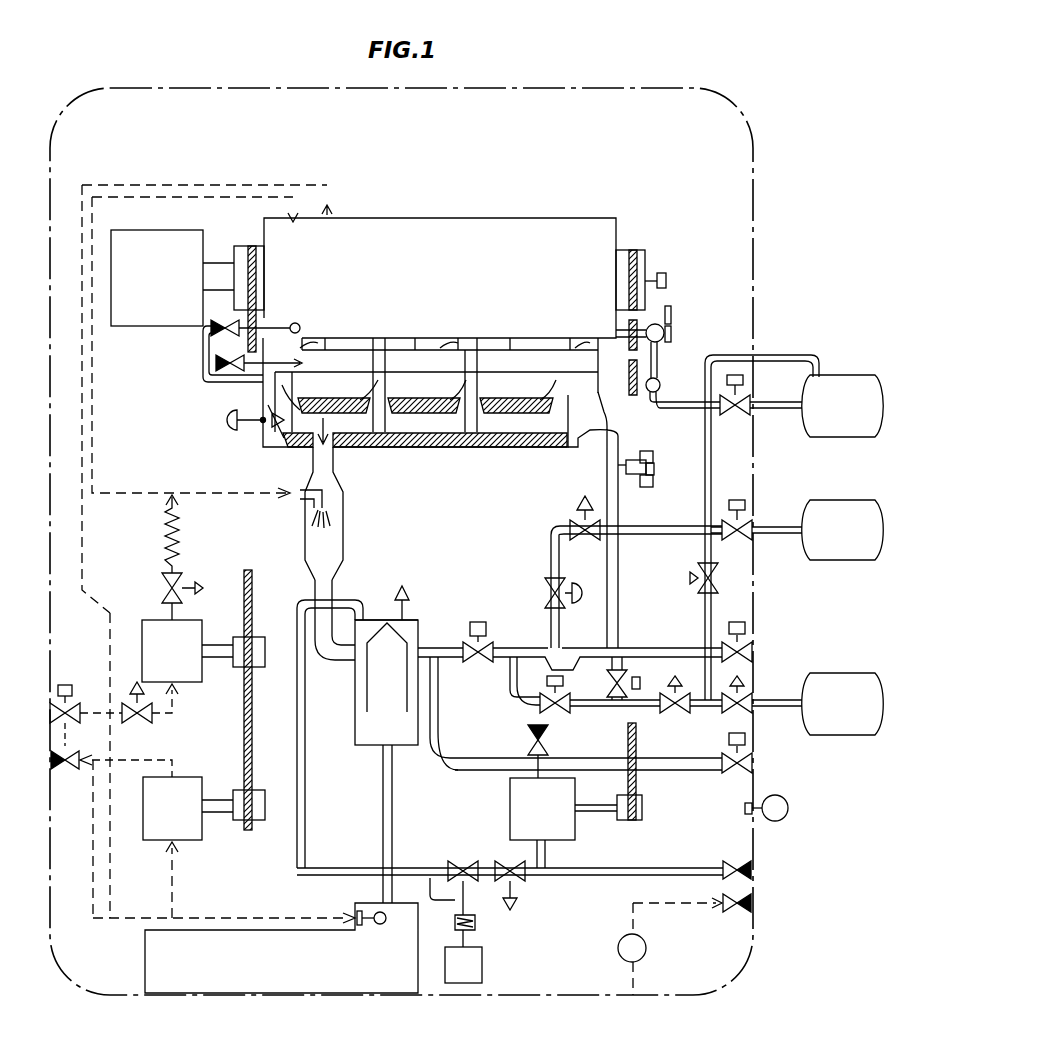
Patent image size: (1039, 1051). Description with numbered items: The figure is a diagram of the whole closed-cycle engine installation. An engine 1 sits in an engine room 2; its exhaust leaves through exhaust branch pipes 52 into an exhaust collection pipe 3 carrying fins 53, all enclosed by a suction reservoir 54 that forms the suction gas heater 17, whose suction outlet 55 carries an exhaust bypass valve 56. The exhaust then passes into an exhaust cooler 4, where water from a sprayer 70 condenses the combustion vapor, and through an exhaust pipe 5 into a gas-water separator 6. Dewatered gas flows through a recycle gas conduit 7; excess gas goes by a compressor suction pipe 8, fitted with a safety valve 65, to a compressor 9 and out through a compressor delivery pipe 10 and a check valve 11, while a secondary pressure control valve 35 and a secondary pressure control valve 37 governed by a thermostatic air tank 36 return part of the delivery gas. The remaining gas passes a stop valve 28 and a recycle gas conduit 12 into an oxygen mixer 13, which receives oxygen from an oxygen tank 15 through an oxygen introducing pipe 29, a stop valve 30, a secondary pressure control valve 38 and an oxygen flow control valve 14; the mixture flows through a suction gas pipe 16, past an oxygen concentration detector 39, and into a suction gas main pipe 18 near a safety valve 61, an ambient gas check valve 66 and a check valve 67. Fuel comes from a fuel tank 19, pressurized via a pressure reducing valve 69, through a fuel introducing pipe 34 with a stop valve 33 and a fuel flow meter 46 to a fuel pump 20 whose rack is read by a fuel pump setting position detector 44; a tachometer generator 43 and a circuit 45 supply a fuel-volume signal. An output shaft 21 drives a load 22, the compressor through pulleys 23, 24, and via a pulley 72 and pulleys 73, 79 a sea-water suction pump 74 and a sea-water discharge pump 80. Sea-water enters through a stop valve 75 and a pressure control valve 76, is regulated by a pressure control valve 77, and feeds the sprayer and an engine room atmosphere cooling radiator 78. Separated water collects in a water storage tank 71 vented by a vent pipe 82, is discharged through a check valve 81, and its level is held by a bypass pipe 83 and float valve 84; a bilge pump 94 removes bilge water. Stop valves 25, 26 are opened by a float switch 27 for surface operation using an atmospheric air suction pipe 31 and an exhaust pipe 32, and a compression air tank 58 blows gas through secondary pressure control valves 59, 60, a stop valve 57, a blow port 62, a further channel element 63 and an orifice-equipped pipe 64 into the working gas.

The engine 1 is at (440, 278).
The engine room 2 is at (401, 541).
The exhaust collection pipe 3 is at (520, 448).
The exhaust cooler 4 is at (345, 495).
The exhaust pipe 5 is at (336, 576).
The gas-water separator 6 is at (355, 718).
The recycle gas conduit 7 is at (428, 648).
The compressor suction pipe 8 is at (445, 735).
The compressor 9 is at (542, 809).
The compressor delivery pipe 10 is at (600, 877).
The check valve 11 is at (737, 862).
The recycle gas conduit 12 is at (523, 647).
The oxygen mixer 13 is at (570, 648).
The oxygen flow control valve 14 is at (560, 585).
The oxygen tank 15 is at (843, 530).
The suction gas pipe 16 is at (620, 624).
The suction gas heater 17 is at (480, 447).
The suction gas main pipe 18 is at (312, 378).
The fuel tank 19 is at (843, 406).
The fuel pump 20 is at (672, 333).
The output shaft 21 is at (220, 262).
The load 22 is at (157, 278).
The pulley 23 is at (636, 248).
The pulley 24 is at (645, 812).
The stop valve 25 is at (745, 645).
The stop valve 26 is at (752, 758).
The float switch 27 is at (788, 812).
The stop valve 28 is at (478, 620).
The oxygen introducing pipe 29 is at (644, 538).
The stop valve 30 is at (737, 500).
The atmospheric air suction pipe 31 is at (678, 410).
The exhaust pipe 32 is at (708, 706).
The stop valve 33 is at (733, 416).
The fuel introducing pipe 34 is at (782, 410).
The secondary pressure control valve 35 is at (518, 906).
The thermostatic air tank 36 is at (482, 970).
The secondary pressure control valve 37 is at (463, 860).
The secondary pressure control valve 38 is at (575, 503).
The oxygen concentration detector 39 is at (655, 460).
The tachometer generator 43 is at (668, 270).
The fuel pump setting position detector 44 is at (672, 312).
The circuit 45 is at (660, 382).
The fuel flow meter 46 is at (736, 914).
The exhaust branch pipe 52 is at (480, 376).
The fins 53 is at (415, 448).
The suction reservoir 54 is at (378, 448).
The suction outlet 55 is at (280, 447).
The exhaust bypass valve 56 is at (268, 425).
The stop valve 57 is at (560, 710).
The compression air tank 58 is at (817, 704).
The secondary pressure control valve 59 is at (748, 708).
The secondary pressure control valve 60 is at (674, 712).
The safety valve 61 is at (225, 340).
The blow port 62 is at (508, 672).
The pipe 63 is at (612, 686).
The orifice-equipped pipe 64 is at (640, 680).
The safety valve 65 is at (528, 745).
The ambient gas check valve 66 is at (410, 592).
The check valve 67 is at (215, 362).
The pressure reducing valve 69 is at (688, 578).
The sprayer 70 is at (312, 505).
The water storage tank 71 is at (281, 869).
The pulley 72 is at (252, 245).
The pulley 73 is at (256, 637).
The sea-water suction pump 74 is at (172, 651).
The stop valve 75 is at (68, 720).
The pressure control valve 76 is at (137, 724).
The pressure control valve 77 is at (160, 588).
The engine room atmosphere cooling radiator 78 is at (176, 532).
The pulley 79 is at (256, 790).
The sea-water discharge pump 80 is at (172, 808).
The check valve 81 is at (65, 772).
The vent pipe 82 is at (355, 884).
The bypass pipe 83 is at (234, 912).
The float valve 84 is at (380, 926).
The bilge pump 94 is at (646, 958).